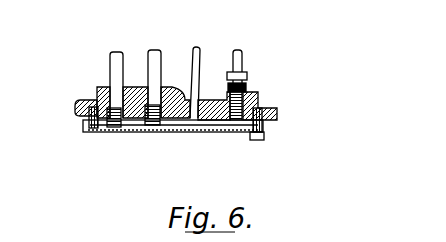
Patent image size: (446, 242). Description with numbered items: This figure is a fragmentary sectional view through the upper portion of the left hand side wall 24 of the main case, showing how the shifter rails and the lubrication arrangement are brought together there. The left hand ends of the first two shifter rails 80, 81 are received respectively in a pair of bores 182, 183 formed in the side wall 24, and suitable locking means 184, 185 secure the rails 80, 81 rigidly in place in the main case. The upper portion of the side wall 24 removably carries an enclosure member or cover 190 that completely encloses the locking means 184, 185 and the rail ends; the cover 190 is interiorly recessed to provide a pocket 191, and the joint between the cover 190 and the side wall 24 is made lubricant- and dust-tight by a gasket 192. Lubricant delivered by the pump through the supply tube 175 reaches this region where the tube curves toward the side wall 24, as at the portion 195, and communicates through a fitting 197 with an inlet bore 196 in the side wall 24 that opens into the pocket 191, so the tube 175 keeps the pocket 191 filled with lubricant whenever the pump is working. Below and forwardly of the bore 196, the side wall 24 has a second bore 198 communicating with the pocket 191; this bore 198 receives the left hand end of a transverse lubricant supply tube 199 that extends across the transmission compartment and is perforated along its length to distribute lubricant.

The left side wall 24 is at (80, 102).
The shifter rail 80 is at (117, 52).
The shifter rail 81 is at (154, 50).
The lubricant supply tube 175 is at (245, 58).
The bore 182 is at (122, 122).
The bore 183 is at (130, 120).
The locking means 184 is at (115, 130).
The locking means 185 is at (152, 128).
The cover 190 is at (240, 132).
The pocket 191 is at (205, 133).
The gasket 192 is at (265, 122).
The portion of tube 195 is at (247, 74).
The bore 196 is at (218, 132).
The fitting 197 is at (250, 89).
The second bore 198 is at (198, 112).
The transverse lubricant supply tube 199 is at (197, 49).